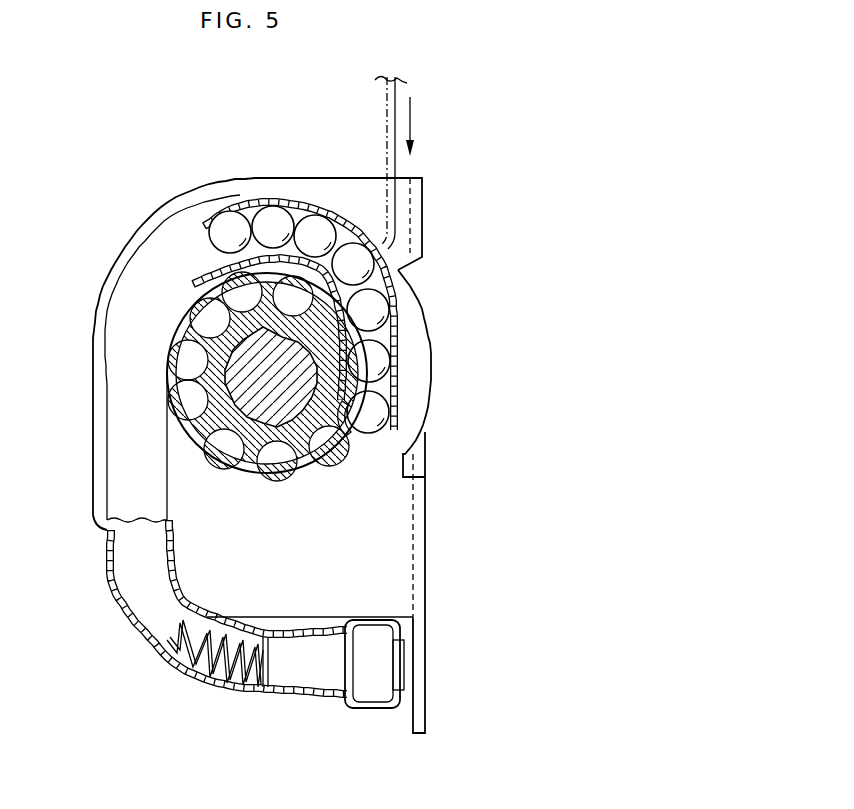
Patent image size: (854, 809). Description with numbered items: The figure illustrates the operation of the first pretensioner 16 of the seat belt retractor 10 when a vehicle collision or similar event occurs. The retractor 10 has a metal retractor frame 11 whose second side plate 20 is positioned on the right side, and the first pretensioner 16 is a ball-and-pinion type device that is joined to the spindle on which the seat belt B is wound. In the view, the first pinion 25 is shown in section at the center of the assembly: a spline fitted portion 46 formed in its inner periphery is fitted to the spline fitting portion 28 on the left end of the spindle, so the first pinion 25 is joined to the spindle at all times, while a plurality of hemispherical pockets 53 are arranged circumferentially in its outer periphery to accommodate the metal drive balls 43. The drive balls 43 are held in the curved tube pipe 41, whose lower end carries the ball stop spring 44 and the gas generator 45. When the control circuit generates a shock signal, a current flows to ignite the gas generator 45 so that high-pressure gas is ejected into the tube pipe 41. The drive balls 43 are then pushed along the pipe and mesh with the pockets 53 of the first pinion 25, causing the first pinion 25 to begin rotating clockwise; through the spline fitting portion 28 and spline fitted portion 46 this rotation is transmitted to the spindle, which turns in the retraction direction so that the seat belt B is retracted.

The seat belt retractor 10 is at (460, 120).
The first pretensioner 16 is at (232, 196).
The seat belt B is at (386, 103).
The drive balls 43 is at (370, 412).
The first pinion 25 is at (195, 445).
The spline fitting portion 28 is at (270, 425).
The spline fitted portion 46 is at (301, 437).
The hemispherical pockets 53 is at (356, 440).
The second side plate 20 is at (405, 537).
The retractor frame 11 is at (425, 694).
The ball stop spring 44 is at (180, 677).
The tube pipe 41 is at (235, 690).
The gas generator 45 is at (317, 678).